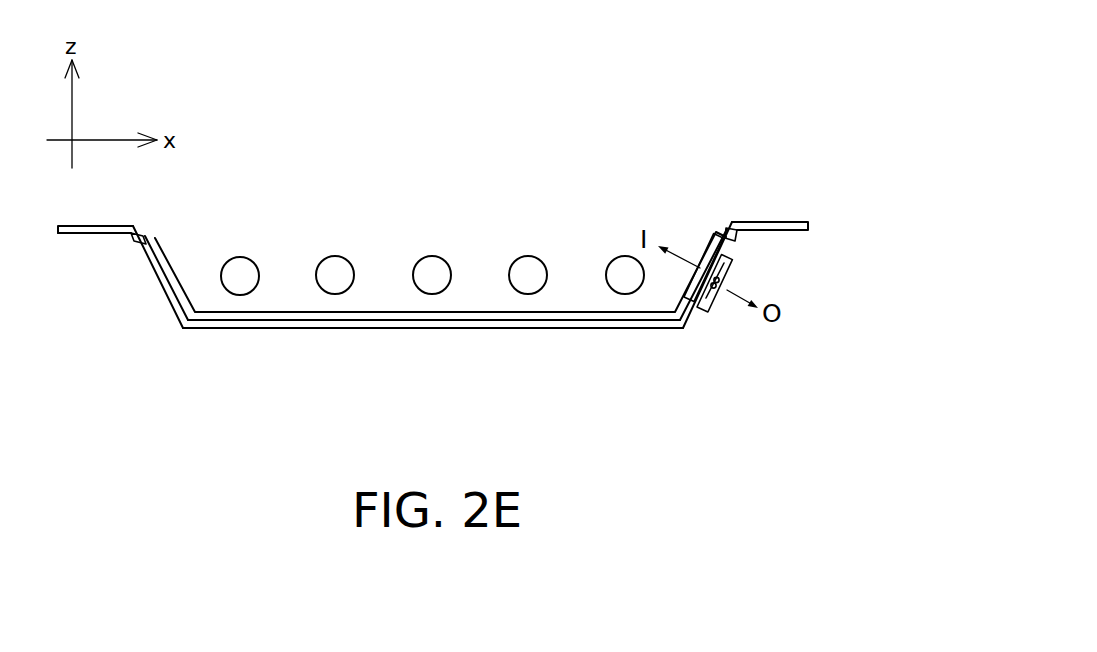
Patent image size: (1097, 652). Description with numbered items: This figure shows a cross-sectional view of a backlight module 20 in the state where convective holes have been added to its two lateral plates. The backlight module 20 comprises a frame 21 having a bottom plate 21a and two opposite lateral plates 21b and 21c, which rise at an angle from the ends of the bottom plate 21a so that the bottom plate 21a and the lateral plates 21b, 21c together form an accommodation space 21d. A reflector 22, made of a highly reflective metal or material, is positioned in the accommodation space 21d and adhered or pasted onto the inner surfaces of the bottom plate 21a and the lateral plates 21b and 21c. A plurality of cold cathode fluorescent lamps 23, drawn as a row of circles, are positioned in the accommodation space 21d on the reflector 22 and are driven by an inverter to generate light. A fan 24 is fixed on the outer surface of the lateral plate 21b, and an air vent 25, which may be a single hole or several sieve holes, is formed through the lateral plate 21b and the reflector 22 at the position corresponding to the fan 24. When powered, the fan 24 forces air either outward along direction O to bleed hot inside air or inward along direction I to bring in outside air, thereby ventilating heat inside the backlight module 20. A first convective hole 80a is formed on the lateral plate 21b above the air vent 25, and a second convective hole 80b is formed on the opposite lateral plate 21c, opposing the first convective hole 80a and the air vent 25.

The backlight module 20 is at (872, 29).
The frame 21 is at (812, 223).
The bottom plate 21a is at (467, 322).
The lateral plate 21b is at (693, 320).
The lateral plate 21c is at (153, 282).
The accommodation space 21d is at (381, 270).
The reflector 22 is at (533, 315).
The cold cathode fluorescent lamps 23 is at (432, 267).
The fan 24 is at (711, 322).
The air vent 25 is at (701, 268).
The first convective hole 80a is at (736, 238).
The second convective hole 80b is at (128, 239).